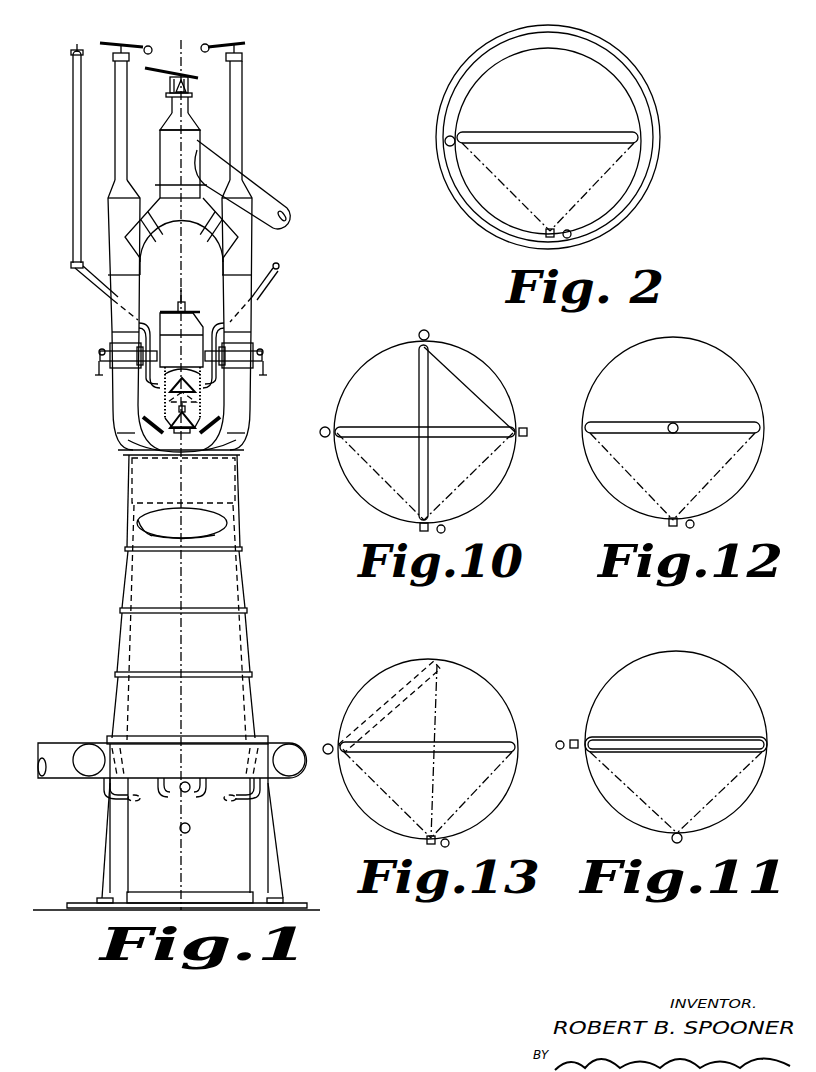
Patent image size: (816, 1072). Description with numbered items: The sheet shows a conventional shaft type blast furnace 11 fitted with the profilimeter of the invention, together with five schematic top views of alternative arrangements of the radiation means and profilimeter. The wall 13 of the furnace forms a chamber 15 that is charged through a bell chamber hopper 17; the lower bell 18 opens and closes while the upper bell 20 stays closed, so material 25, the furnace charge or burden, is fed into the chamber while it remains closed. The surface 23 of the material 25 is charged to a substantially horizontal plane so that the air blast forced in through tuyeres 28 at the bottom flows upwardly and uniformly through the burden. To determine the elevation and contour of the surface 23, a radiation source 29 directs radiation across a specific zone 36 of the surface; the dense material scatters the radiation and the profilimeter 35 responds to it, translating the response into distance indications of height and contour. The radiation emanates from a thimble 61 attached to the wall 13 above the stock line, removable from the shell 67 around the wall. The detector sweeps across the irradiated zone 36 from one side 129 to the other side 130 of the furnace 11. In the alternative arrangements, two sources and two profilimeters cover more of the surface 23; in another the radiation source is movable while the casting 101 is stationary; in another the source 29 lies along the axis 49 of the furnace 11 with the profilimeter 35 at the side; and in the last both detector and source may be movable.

In FIG. 1, the blast furnace 11 is at (262, 640).
In FIG. 2, the blast furnace 11 is at (661, 124).
In FIG. 10, the blast furnace 11 is at (498, 370).
In FIG. 12, the blast furnace 11 is at (744, 362).
In FIG. 13, the blast furnace 11 is at (516, 788).
In FIG. 11, the blast furnace 11 is at (754, 807).
In FIG. 1, the wall 13 is at (243, 591).
In FIG. 2, the wall 13 is at (642, 181).
In FIG. 1, the chamber 15 is at (205, 527).
In FIG. 2, the chamber 15 is at (482, 190).
In FIG. 1, the bell chamber hopper 17 is at (202, 397).
In FIG. 1, the lower bell 18 is at (203, 413).
In FIG. 1, the upper bell 20 is at (203, 385).
In FIG. 1, the surface 23 is at (137, 542).
In FIG. 2, the surface 23 is at (607, 82).
In FIG. 10, the surface 23 is at (494, 481).
In FIG. 13, the surface 23 is at (496, 702).
In FIG. 11, the surface 23 is at (743, 703).
In FIG. 1, the material 25 is at (140, 524).
In FIG. 2, the material 25 is at (620, 108).
In FIG. 1, the tuyeres 28 is at (206, 799).
In FIG. 1, the radiation source 29 is at (150, 422).
In FIG. 2, the radiation source 29 is at (445, 136).
In FIG. 10, the radiation source 29 is at (431, 336).
In FIG. 12, the radiation source 29 is at (680, 425).
In FIG. 13, the radiation source 29 is at (330, 745).
In FIG. 11, the radiation source 29 is at (670, 840).
In FIG. 1, the profilimeter 35 is at (192, 429).
In FIG. 2, the profilimeter 35 is at (543, 234).
In FIG. 10, the profilimeter 35 is at (532, 424).
In FIG. 12, the profilimeter 35 is at (667, 523).
In FIG. 13, the profilimeter 35 is at (414, 845).
In FIG. 2, the zone 36 is at (525, 130).
In FIG. 10, the zone 36 is at (488, 430).
In FIG. 12, the zone 36 is at (632, 422).
In FIG. 13, the zone 36 is at (387, 742).
In FIG. 11, the zone 36 is at (682, 737).
In FIG. 1, the axis 49 is at (186, 643).
In FIG. 2, the axis 49 is at (548, 140).
In FIG. 12, the axis 49 is at (673, 434).
In FIG. 1, the thimble 61 is at (137, 451).
In FIG. 2, the shell 67 is at (653, 156).
In FIG. 11, the casting 101 is at (576, 740).
In FIG. 1, the one side 129 is at (137, 581).
In FIG. 1, the other side 130 is at (234, 575).